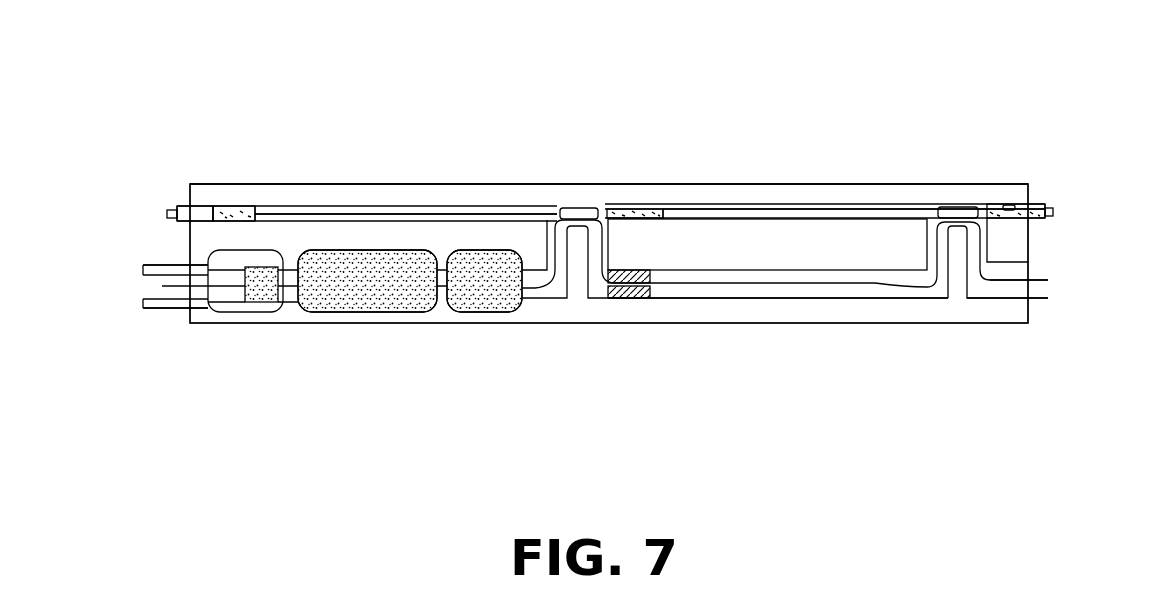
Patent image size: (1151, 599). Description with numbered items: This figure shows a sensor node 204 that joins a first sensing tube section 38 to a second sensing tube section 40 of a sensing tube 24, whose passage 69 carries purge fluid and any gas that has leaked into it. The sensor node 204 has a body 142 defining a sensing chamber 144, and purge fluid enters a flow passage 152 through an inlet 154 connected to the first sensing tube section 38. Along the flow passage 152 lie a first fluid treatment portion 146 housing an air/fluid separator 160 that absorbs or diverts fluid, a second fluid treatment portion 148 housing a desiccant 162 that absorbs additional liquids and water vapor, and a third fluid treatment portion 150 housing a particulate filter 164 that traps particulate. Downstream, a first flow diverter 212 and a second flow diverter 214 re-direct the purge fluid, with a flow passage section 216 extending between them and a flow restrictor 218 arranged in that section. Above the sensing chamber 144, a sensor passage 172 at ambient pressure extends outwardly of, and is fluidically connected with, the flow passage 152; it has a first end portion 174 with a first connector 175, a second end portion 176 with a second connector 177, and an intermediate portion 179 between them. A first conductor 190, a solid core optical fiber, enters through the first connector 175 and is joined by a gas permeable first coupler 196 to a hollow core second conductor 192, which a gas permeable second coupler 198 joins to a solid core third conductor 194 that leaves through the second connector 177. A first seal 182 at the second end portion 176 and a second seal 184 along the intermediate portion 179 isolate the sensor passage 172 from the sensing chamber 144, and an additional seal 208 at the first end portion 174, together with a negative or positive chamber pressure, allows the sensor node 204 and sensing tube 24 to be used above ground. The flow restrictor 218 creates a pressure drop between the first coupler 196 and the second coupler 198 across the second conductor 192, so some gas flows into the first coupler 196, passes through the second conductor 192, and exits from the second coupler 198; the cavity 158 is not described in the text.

The sensor node 204 is at (148, 81).
The first end portion 174 is at (197, 210).
The first connector 175 is at (168, 221).
The inlet 154 is at (190, 270).
The passage 69 is at (153, 285).
The first sensing tube section 38 is at (138, 310).
The sensing tube 24 is at (138, 336).
The first fluid treatment portion 146 is at (214, 316).
The air/fluid separator 160 is at (258, 305).
The second fluid treatment portion 148 is at (317, 317).
The desiccant 162 is at (387, 292).
The third fluid treatment portion 150 is at (462, 317).
The particulate filter 164 is at (505, 298).
The sensing chamber 144 is at (553, 285).
The first flow diverter 212 is at (578, 273).
The flow passage section 216 is at (765, 285).
The body 142 is at (886, 326).
The flow restrictor 218 is at (652, 290).
The second flow diverter 214 is at (960, 272).
The second sensing tube section 40 is at (1047, 310).
The additional seal 208 is at (233, 207).
The sensor passage 172 is at (293, 182).
The first conductor 190 is at (380, 207).
The intermediate portion 179 is at (423, 207).
The flow passage 152 is at (552, 220).
The first coupler 196 is at (576, 205).
The second seal 184 is at (640, 207).
The second conductor 192 is at (703, 203).
The second coupler 198 is at (955, 205).
The first seal 182 is at (993, 207).
The third conductor 194 is at (1013, 207).
The second end portion 176 is at (1030, 203).
The second connector 177 is at (1054, 209).
The cavity 158 is at (1025, 262).